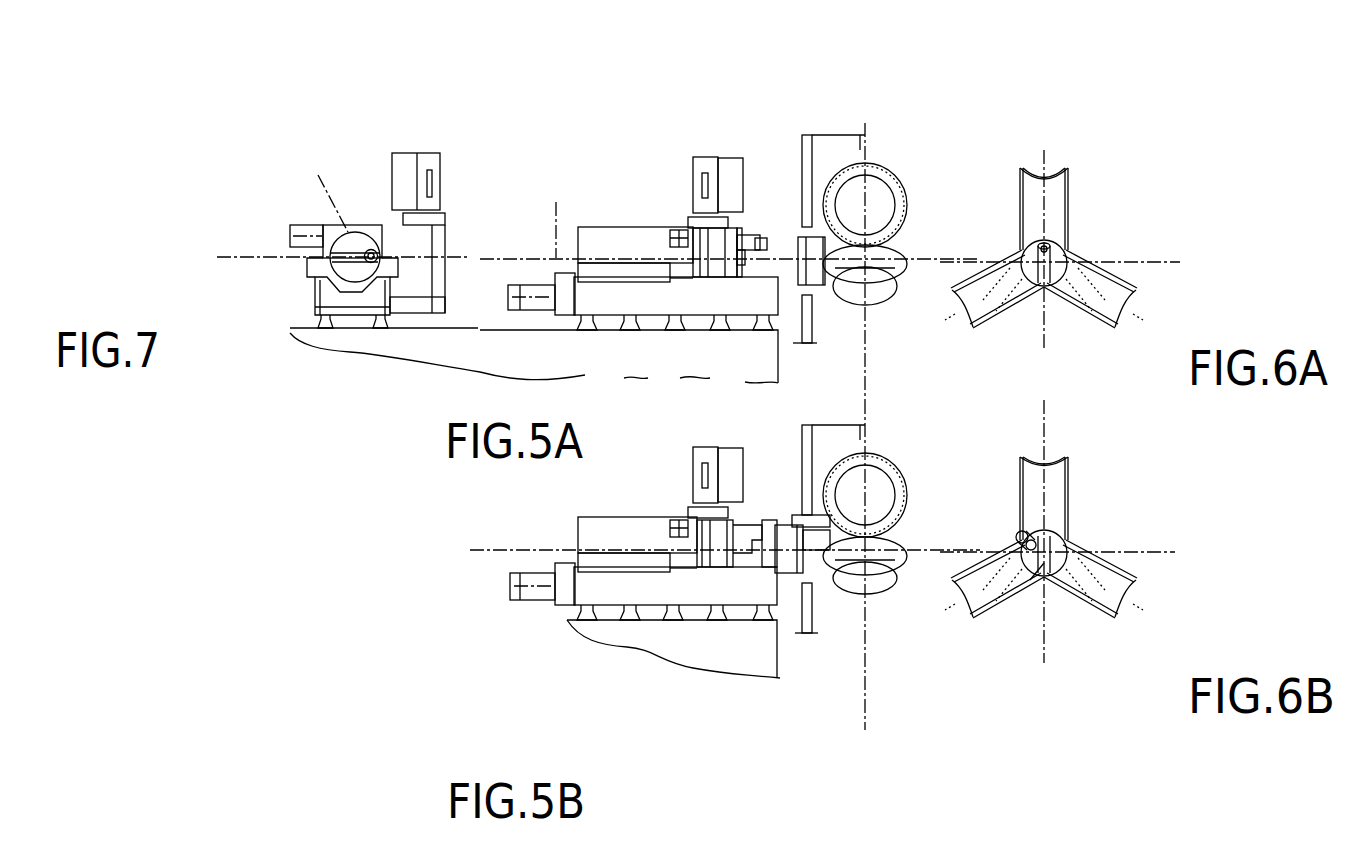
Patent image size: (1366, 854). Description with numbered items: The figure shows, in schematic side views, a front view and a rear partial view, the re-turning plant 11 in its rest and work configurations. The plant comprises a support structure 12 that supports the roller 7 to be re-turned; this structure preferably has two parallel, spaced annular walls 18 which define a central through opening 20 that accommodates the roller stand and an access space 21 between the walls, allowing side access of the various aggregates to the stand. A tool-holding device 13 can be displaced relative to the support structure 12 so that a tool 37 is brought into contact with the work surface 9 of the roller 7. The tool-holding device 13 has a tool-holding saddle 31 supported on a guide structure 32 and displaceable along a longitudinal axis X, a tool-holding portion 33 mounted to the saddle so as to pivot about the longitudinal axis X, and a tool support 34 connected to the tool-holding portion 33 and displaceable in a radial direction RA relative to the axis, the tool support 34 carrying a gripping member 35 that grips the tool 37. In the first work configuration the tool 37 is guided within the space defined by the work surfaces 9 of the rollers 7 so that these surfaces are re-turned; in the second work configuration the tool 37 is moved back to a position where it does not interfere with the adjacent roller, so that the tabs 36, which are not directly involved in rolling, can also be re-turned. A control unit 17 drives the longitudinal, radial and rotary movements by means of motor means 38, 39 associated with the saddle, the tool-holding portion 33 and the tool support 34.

In FIG. 5A, the roller 7 is at (885, 196).
In FIG. 6A, the roller 7 is at (1058, 200).
In FIG. 5B, the roller 7 is at (882, 488).
In FIG. 6B, the roller 7 is at (1050, 506).
In FIG. 6A, the work surface 9 is at (1036, 166).
In FIG. 6B, the work surface 9 is at (1050, 460).
In FIG. 5A, the re-turning plant 11 is at (810, 90).
In FIG. 5B, the re-turning plant 11 is at (690, 717).
In FIG. 5A, the support structure 12 is at (822, 143).
In FIG. 5B, the support structure 12 is at (818, 440).
In FIG. 5A, the tool-holding device 13 is at (718, 263).
In FIG. 5B, the tool-holding device 13 is at (713, 545).
In FIG. 7, the control unit 17 is at (432, 175).
In FIG. 5A, the control unit 17 is at (697, 207).
In FIG. 5B, the control unit 17 is at (697, 495).
In FIG. 5A, the annular walls 18 is at (804, 140).
In FIG. 5B, the annular walls 18 is at (805, 445).
In FIG. 5A, the central through opening 20 is at (815, 290).
In FIG. 5B, the central through opening 20 is at (795, 514).
In FIG. 5A, the access space 21 is at (853, 148).
In FIG. 5B, the access space 21 is at (850, 445).
In FIG. 7, the tool-holding saddle 31 is at (308, 280).
In FIG. 5A, the tool-holding saddle 31 is at (731, 266).
In FIG. 5B, the tool-holding saddle 31 is at (730, 558).
In FIG. 7, the guide structure 32 is at (317, 290).
In FIG. 5A, the guide structure 32 is at (697, 280).
In FIG. 5B, the guide structure 32 is at (678, 568).
In FIG. 7, the tool-holding portion 33 is at (374, 250).
In FIG. 5A, the tool-holding portion 33 is at (740, 235).
In FIG. 5B, the tool-holding portion 33 is at (748, 526).
In FIG. 7, the tool support 34 is at (362, 237).
In FIG. 5A, the tool support 34 is at (750, 240).
In FIG. 5B, the tool support 34 is at (770, 555).
In FIG. 6B, the tool support 34 is at (1050, 563).
In FIG. 7, the gripping member 35 is at (356, 262).
In FIG. 6A, the tabs 36 is at (1021, 168).
In FIG. 6B, the tabs 36 is at (1021, 458).
In FIG. 6A, the tool 37 is at (1055, 248).
In FIG. 6B, the tool 37 is at (1020, 530).
In FIG. 5A, the motor means 38 is at (530, 292).
In FIG. 5B, the motor means 38 is at (540, 582).
In FIG. 7, the motor means 39 is at (305, 228).
In FIG. 7, the radial direction RA is at (240, 256).
In FIG. 7, the longitudinal axis X is at (323, 187).
In FIG. 5A, the longitudinal axis X is at (558, 216).